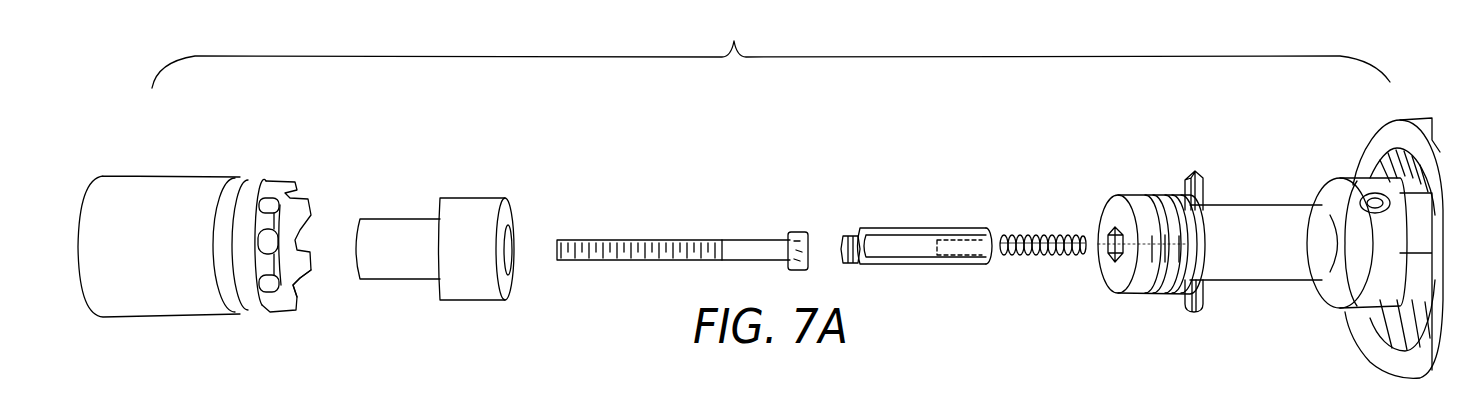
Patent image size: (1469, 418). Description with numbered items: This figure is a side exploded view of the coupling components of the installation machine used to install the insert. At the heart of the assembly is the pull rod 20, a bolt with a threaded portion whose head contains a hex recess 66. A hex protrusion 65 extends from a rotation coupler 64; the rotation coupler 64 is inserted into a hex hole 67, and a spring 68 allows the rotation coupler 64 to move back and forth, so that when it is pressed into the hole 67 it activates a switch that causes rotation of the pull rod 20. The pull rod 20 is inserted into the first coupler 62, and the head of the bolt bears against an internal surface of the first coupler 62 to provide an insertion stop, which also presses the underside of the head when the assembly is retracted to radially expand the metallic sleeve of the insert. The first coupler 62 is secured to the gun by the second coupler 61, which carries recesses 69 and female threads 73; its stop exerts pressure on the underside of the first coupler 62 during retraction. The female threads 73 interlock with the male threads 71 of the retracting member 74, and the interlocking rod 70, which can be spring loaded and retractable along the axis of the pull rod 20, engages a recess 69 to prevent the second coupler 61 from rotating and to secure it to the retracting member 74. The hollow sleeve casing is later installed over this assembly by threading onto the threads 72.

The pull-rod 20 is at (642, 241).
The second coupler 61 is at (180, 318).
The first coupler 62 is at (380, 230).
The rotation coupler 64 is at (910, 228).
The hex protrusion 65 is at (840, 248).
The hex recess 66 is at (808, 254).
The hex hole 67 is at (1116, 252).
The spring 68 is at (1038, 236).
The recess 69 is at (299, 281).
The interlocking rod 70 is at (1192, 170).
The male threads 71 is at (1163, 292).
The threads 72 is at (1397, 333).
The female threads 73 is at (279, 235).
The retracting member 74 is at (1283, 265).